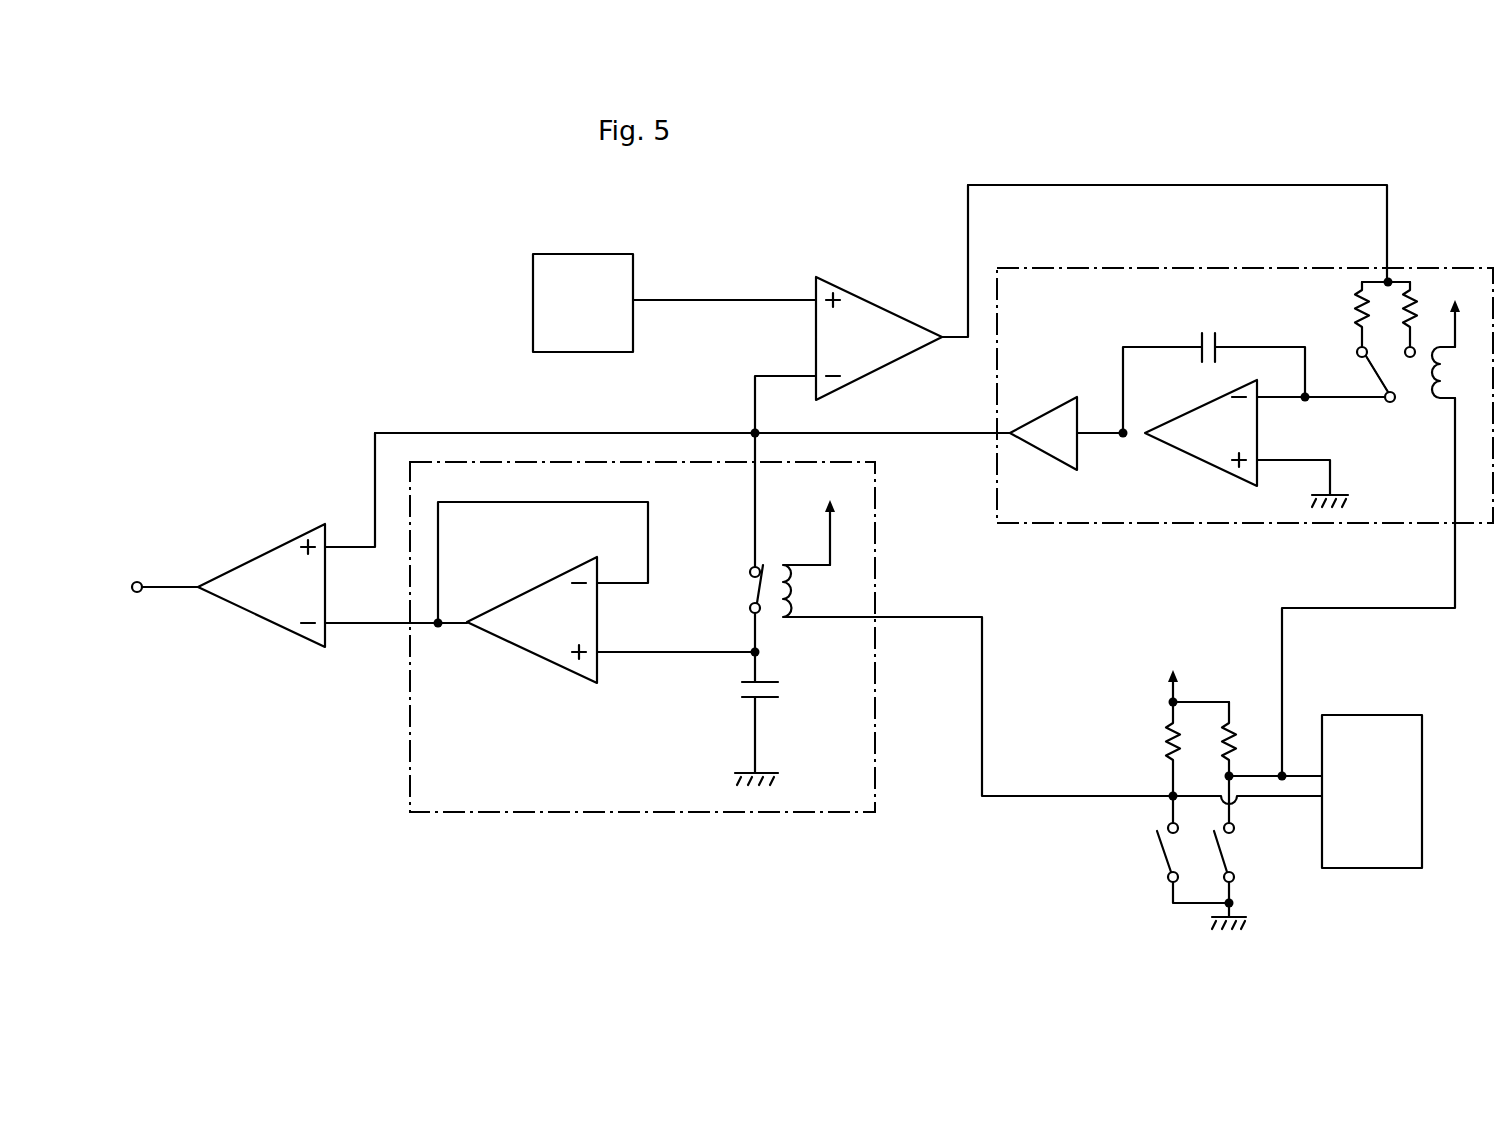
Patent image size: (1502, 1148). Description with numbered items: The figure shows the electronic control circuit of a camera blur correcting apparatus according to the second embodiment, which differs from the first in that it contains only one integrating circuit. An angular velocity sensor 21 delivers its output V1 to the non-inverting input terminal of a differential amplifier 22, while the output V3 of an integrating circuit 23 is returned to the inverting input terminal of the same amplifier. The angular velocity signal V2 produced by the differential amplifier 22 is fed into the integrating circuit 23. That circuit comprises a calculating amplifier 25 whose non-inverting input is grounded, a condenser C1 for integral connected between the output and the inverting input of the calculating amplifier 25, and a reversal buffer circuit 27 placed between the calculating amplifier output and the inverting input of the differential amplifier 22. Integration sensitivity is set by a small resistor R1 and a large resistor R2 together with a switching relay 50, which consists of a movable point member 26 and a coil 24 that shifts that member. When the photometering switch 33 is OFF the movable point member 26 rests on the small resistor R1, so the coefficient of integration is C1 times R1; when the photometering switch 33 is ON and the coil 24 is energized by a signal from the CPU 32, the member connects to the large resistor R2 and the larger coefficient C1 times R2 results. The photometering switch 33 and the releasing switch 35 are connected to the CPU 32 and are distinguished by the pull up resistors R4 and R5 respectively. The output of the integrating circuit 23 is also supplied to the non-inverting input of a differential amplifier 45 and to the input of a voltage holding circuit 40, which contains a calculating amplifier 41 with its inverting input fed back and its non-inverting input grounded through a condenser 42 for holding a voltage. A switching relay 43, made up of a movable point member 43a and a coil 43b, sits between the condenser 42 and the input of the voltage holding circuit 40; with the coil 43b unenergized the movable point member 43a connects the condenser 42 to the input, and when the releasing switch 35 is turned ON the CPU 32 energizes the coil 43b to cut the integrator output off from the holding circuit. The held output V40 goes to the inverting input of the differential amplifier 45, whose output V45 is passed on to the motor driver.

The angular velocity sensor 21 is at (580, 254).
The differential amplifier 22 is at (878, 304).
The integrating circuit 23 is at (1172, 508).
The coil 24 is at (1445, 385).
The calculating amplifier 25 is at (1184, 416).
The movable point member 26 is at (1375, 376).
The reversal buffer circuit 27 is at (1047, 414).
The CPU 32 is at (1362, 860).
The photometering switch 33 is at (1226, 851).
The releasing switch 35 is at (1155, 851).
The voltage holding circuit 40 is at (875, 700).
The calculating amplifier 41 is at (524, 650).
The condenser 42 is at (738, 688).
The switching relay 43 is at (779, 556).
The movable point member 43a is at (748, 584).
The coil 43b is at (799, 578).
The differential amplifier 45 is at (276, 624).
The switching relay 50 is at (1407, 393).
The small resistor R1 is at (1358, 305).
The large resistor R2 is at (1414, 300).
The pull up resistor R4 is at (1166, 750).
The pull up resistor R5 is at (1232, 736).
The condenser for integral C1 is at (1200, 342).
The output of the angular velocity sensor V1 is at (703, 299).
The angular velocity signal V2 is at (1052, 185).
The output of the integrating circuit V3 is at (838, 433).
The output of the voltage holding circuit V40 is at (369, 625).
The output of the differential amplifier V45 is at (163, 587).